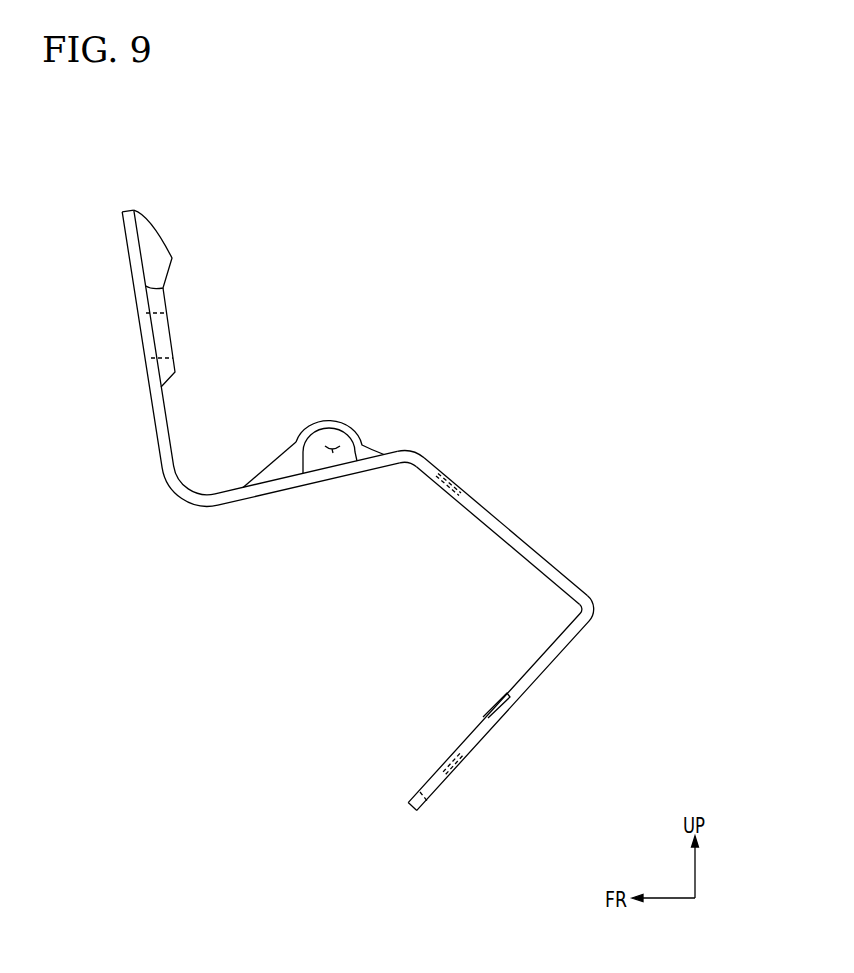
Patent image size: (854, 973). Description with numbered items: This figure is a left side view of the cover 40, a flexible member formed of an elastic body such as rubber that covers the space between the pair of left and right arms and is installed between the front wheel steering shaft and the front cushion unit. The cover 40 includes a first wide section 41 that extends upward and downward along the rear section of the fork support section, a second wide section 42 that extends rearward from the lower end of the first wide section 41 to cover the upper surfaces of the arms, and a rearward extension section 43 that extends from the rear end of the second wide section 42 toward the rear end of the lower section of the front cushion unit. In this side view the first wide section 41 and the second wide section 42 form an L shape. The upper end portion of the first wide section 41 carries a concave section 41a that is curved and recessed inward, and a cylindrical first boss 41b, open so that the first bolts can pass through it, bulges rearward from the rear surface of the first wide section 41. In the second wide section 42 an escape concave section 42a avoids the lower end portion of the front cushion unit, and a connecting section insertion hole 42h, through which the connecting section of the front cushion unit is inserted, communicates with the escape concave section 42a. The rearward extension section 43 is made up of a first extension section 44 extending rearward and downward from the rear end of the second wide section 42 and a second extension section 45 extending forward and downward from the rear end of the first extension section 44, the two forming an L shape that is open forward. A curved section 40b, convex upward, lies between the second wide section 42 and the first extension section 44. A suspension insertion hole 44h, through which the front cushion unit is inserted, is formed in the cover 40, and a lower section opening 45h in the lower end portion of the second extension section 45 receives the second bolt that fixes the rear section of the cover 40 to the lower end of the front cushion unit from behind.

The cover 40 is at (587, 213).
The curved section 40b is at (413, 450).
The first wide section 41 is at (167, 421).
The concave section 41a is at (167, 252).
The first boss 41b is at (168, 335).
The second wide section 42 is at (343, 490).
The escape concave section 42a is at (332, 437).
The connecting section insertion hole 42h is at (332, 462).
The rearward extension section 43 is at (569, 645).
The first extension section 44 is at (550, 533).
The suspension insertion hole 44h is at (477, 492).
The second extension section 45 is at (545, 714).
The lower section opening 45h is at (447, 775).